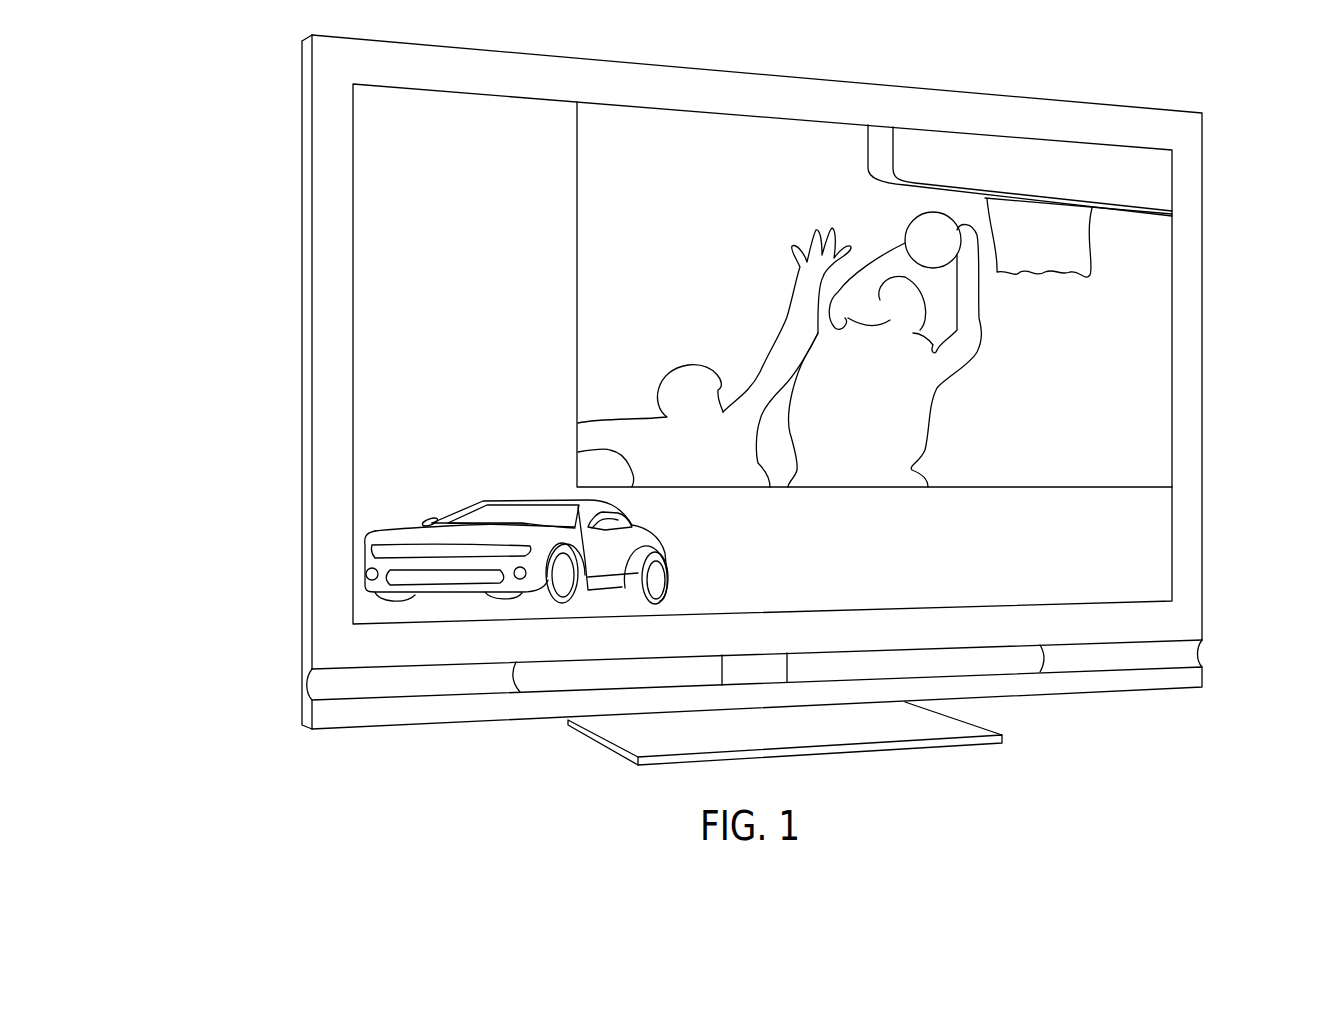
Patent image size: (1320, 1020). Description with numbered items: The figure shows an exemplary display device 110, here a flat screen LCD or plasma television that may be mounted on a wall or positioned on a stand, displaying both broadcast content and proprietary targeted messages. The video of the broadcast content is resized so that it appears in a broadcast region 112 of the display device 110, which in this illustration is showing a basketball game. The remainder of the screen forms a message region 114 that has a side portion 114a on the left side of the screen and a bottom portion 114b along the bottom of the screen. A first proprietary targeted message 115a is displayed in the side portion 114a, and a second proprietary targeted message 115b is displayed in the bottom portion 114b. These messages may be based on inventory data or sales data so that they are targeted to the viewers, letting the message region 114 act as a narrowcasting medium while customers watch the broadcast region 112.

The display device 110 is at (238, 95).
The broadcast region 112 is at (1160, 283).
The message region 114 is at (395, 481).
The side portion 114a is at (400, 320).
The first proprietary targeted message 115a is at (403, 377).
The bottom portion 114b is at (1038, 546).
The second proprietary targeted message 115b is at (797, 518).